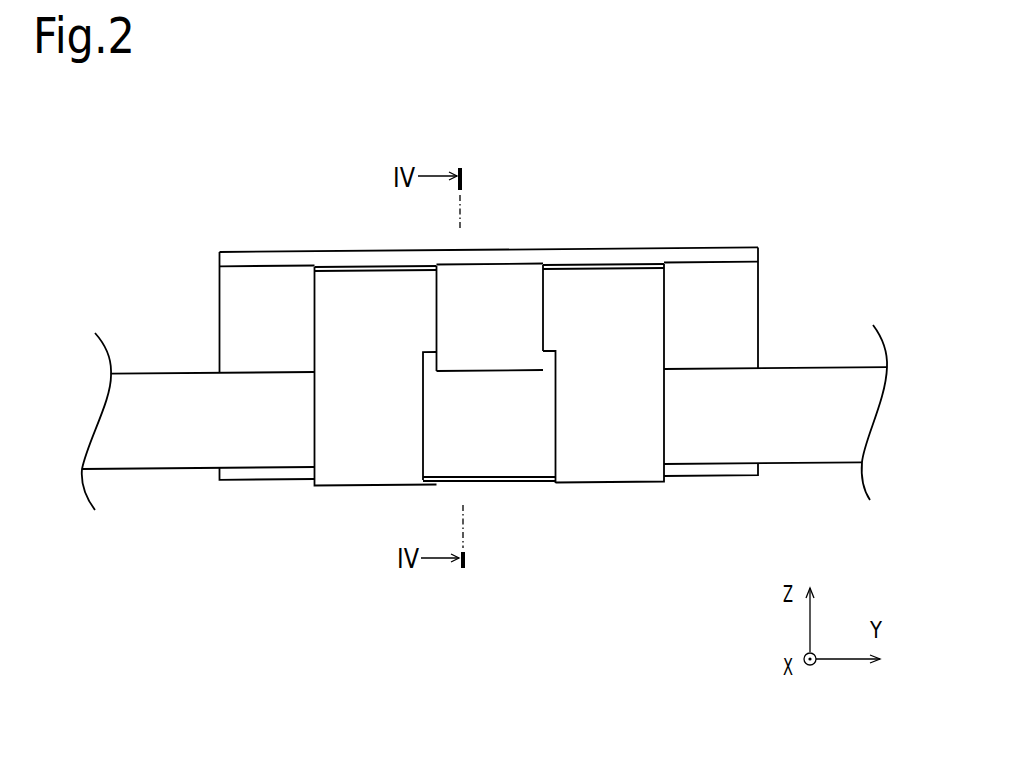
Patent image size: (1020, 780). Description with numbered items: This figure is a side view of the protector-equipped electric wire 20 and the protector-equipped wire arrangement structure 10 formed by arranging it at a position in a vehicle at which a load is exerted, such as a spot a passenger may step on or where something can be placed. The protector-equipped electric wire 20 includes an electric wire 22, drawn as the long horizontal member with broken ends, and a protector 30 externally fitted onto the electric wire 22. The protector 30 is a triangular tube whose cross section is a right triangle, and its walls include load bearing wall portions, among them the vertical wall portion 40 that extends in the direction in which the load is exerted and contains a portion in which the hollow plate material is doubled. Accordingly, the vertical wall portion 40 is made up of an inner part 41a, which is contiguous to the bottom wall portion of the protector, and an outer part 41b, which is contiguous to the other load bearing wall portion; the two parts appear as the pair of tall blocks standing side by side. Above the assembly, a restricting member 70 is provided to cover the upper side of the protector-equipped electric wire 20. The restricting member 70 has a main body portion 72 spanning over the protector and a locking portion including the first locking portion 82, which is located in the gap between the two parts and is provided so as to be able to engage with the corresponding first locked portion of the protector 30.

The protector-equipped wire arrangement structure 10 is at (305, 148).
The protector-equipped electric wire 20 is at (728, 568).
The electric wire 22 is at (723, 443).
The protector 30 is at (647, 483).
The vertical wall portion 40 is at (610, 568).
The inner part 41a is at (538, 463).
The outer part 41b is at (605, 457).
The restricting member 70 is at (712, 247).
The main body portion 72 is at (758, 300).
The first locking portion 82 is at (507, 313).